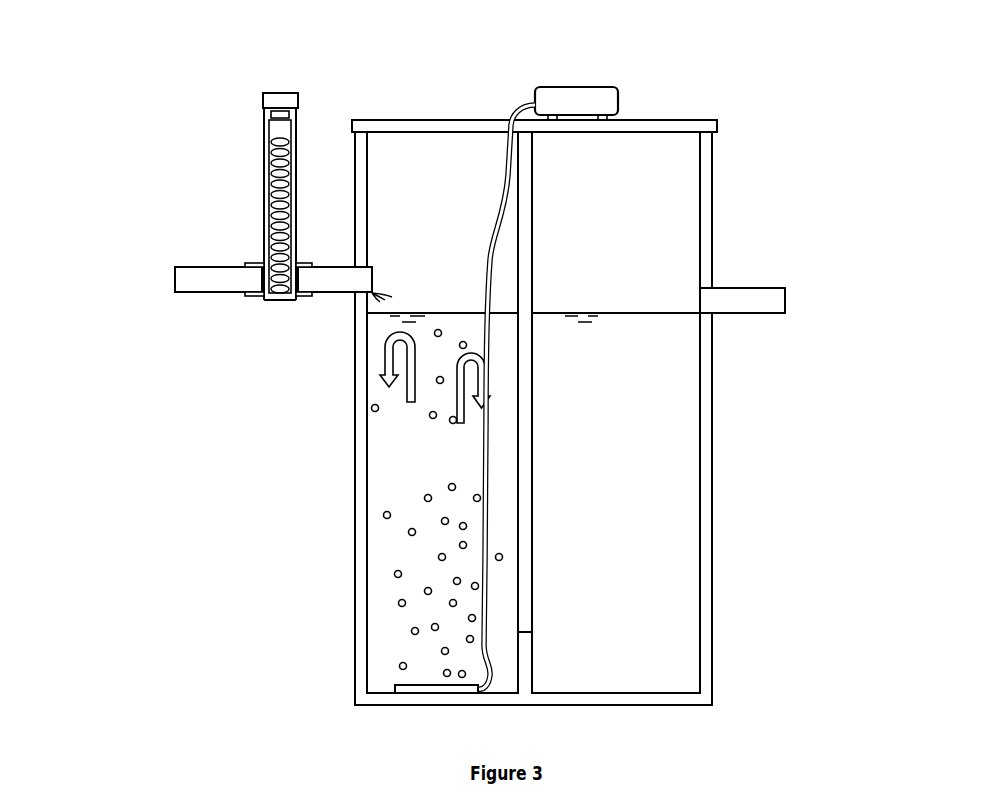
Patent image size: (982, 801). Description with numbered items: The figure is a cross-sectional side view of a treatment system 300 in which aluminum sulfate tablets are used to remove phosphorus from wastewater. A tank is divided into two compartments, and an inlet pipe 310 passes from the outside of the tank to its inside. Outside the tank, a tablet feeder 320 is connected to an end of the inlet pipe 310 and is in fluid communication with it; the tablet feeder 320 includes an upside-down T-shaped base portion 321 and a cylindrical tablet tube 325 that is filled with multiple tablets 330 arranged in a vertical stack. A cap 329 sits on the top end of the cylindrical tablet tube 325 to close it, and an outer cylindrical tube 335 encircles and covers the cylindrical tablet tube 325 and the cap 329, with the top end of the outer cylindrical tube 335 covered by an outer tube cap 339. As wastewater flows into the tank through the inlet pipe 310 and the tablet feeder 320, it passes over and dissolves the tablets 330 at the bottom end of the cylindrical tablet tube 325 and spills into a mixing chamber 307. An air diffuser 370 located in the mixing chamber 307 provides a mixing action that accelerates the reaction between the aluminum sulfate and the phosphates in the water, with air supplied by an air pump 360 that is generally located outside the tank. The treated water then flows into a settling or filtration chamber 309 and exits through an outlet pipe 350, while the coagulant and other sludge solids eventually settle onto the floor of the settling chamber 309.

The treatment system 300 is at (122, 108).
The mixing chamber 307 is at (385, 553).
The settling chamber 309 is at (670, 597).
The inlet pipe 310 is at (220, 272).
The tablet feeder 320 is at (263, 295).
The base portion 321 is at (298, 296).
The cylindrical tablet tube 325 is at (270, 208).
The cap 329 is at (267, 112).
The tablets 330 is at (288, 148).
The outer cylindrical tube 335 is at (298, 170).
The outer tube cap 339 is at (277, 100).
The outlet pipe 350 is at (735, 302).
The air pump 360 is at (535, 97).
The air diffuser 370 is at (395, 687).